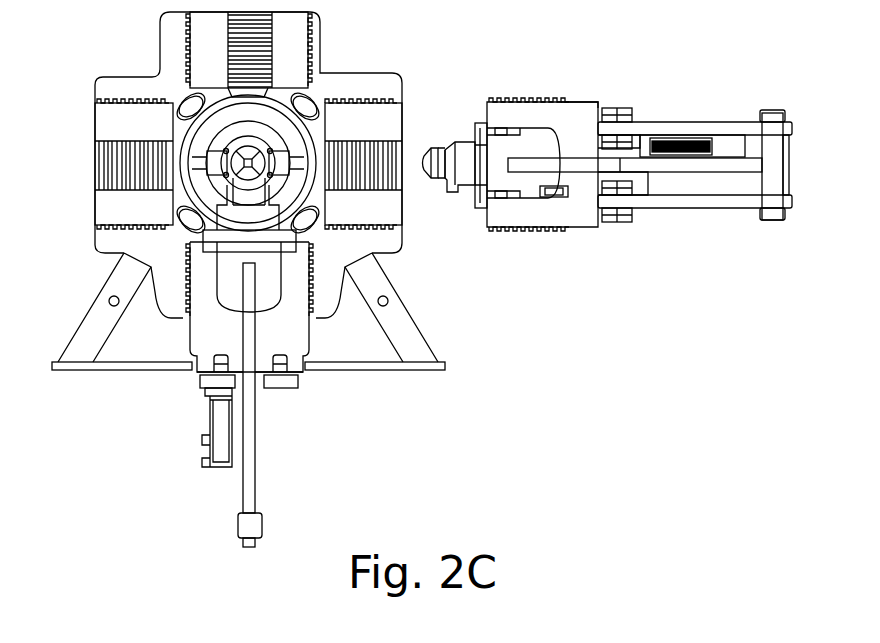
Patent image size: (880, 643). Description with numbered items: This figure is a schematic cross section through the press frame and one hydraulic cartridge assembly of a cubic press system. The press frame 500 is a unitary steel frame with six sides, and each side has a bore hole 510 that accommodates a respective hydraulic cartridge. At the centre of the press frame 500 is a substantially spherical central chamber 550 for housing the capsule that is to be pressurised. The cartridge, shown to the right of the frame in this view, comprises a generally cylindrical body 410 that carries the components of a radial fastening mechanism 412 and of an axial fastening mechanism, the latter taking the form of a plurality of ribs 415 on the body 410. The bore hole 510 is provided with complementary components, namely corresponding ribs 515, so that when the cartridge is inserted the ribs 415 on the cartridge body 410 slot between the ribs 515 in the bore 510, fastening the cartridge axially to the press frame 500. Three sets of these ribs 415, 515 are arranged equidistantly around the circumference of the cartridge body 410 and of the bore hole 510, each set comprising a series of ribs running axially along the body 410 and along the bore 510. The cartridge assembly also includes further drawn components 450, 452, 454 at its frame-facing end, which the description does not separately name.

The press frame 500 is at (138, 80).
The bore hole 510 is at (385, 118).
The ribs in the bore 515 is at (373, 100).
The central chamber 550 is at (248, 163).
The cartridge body 410 is at (538, 213).
The radial fastening mechanism 412 is at (565, 101).
The ribs on the cartridge body 415 is at (522, 98).
The retainer 450 is at (484, 210).
The plunger body 452 is at (453, 148).
The poppet 454 is at (437, 175).